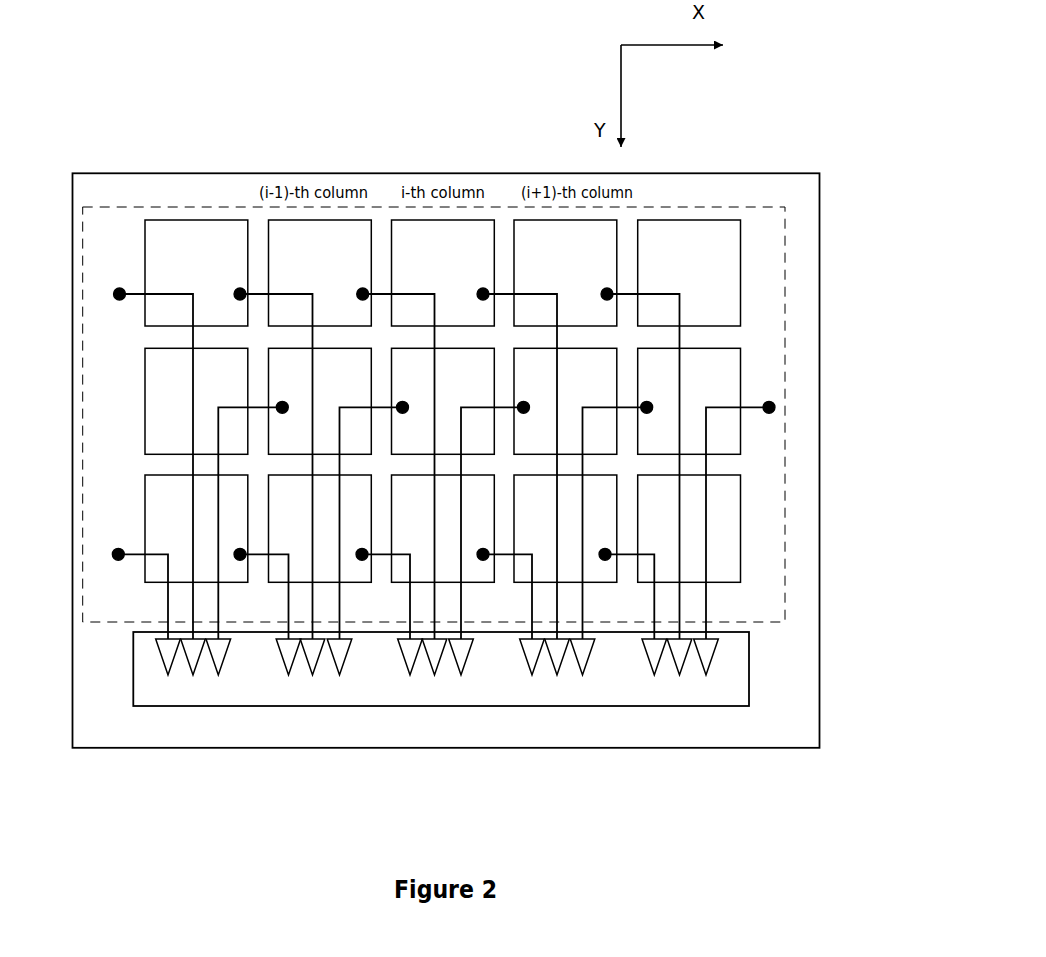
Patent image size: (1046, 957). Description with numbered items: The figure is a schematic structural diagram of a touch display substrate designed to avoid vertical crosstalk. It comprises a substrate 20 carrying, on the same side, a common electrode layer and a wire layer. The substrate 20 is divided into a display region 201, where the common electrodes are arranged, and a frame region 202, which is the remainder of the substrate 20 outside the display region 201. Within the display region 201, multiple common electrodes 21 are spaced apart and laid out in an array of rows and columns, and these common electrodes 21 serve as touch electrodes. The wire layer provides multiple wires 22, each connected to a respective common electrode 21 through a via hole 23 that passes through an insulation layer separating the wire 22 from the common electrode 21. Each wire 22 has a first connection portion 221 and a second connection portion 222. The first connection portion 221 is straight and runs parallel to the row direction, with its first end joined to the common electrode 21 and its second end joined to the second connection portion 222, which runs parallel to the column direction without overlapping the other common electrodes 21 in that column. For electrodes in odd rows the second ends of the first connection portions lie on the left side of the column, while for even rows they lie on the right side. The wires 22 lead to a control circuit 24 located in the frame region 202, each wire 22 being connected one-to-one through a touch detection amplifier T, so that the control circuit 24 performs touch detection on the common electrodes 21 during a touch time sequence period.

The substrate 20 is at (417, 749).
The display region 201 is at (493, 206).
The frame region 202 is at (800, 217).
The common electrode 21 is at (430, 254).
The wire 22 is at (97, 294).
The first connection portion 221 is at (300, 293).
The second connection portion 222 is at (310, 382).
The via hole 23 is at (484, 287).
The control circuit 24 is at (512, 707).
The touch detection amplifier T is at (587, 669).